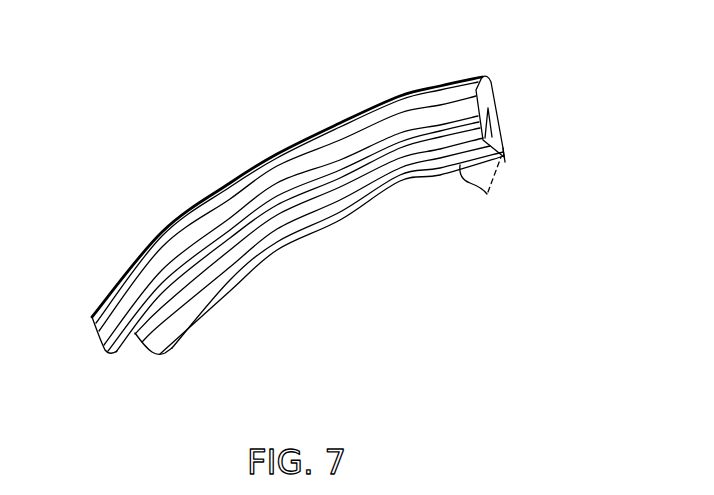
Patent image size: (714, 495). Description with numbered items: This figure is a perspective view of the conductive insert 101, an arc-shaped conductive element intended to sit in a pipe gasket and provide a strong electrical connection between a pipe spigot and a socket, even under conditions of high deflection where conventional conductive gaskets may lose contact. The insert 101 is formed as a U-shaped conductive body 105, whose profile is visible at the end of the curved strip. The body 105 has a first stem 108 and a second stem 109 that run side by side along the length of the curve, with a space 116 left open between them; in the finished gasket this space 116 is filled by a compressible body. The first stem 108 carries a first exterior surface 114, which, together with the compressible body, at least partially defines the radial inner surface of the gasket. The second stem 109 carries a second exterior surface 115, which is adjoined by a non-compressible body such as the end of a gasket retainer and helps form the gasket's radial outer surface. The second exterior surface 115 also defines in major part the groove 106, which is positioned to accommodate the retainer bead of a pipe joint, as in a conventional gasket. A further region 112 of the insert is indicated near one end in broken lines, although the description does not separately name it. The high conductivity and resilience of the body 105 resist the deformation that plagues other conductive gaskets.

The conductive insert 101 is at (335, 224).
The U-shaped conductive body 105 is at (488, 97).
The groove 106 is at (298, 167).
The first stem 108 is at (105, 352).
The second stem 109 is at (504, 153).
The cut-away region 112 is at (473, 187).
The first exterior surface 114 is at (407, 137).
The second exterior surface 115 is at (500, 128).
The space 116 is at (137, 334).